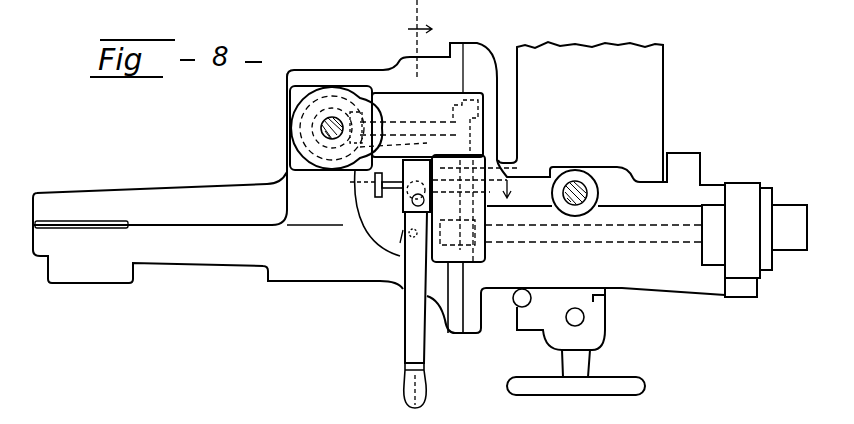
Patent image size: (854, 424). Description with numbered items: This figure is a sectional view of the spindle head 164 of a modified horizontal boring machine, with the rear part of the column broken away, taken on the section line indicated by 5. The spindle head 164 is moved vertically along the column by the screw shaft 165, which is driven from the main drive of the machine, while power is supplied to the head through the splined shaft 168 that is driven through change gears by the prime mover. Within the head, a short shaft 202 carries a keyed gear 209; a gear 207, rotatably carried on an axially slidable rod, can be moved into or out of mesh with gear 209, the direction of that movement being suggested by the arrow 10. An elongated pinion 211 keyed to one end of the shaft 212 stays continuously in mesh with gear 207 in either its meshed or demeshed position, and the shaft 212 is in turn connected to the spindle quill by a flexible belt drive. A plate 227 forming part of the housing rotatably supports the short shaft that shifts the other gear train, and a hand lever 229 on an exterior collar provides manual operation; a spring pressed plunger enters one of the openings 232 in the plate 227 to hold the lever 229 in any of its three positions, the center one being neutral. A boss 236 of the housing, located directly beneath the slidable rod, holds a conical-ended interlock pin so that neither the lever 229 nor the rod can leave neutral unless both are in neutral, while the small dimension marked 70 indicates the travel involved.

The section line 5 is at (433, 6).
The direction arrow 10 is at (516, 191).
The pin 70 is at (345, 178).
The spindle head 164 is at (680, 283).
The screw shaft 165 is at (581, 182).
The splined shaft 168 is at (333, 118).
The short shaft 202 is at (407, 124).
The gear 207 is at (517, 168).
The gear 209 is at (497, 111).
The elongated pinion 211 is at (483, 250).
The shaft 212 is at (642, 237).
The plate 227 is at (372, 216).
The hand lever 229 is at (415, 338).
The openings 232 is at (391, 240).
The boss 236 is at (403, 198).